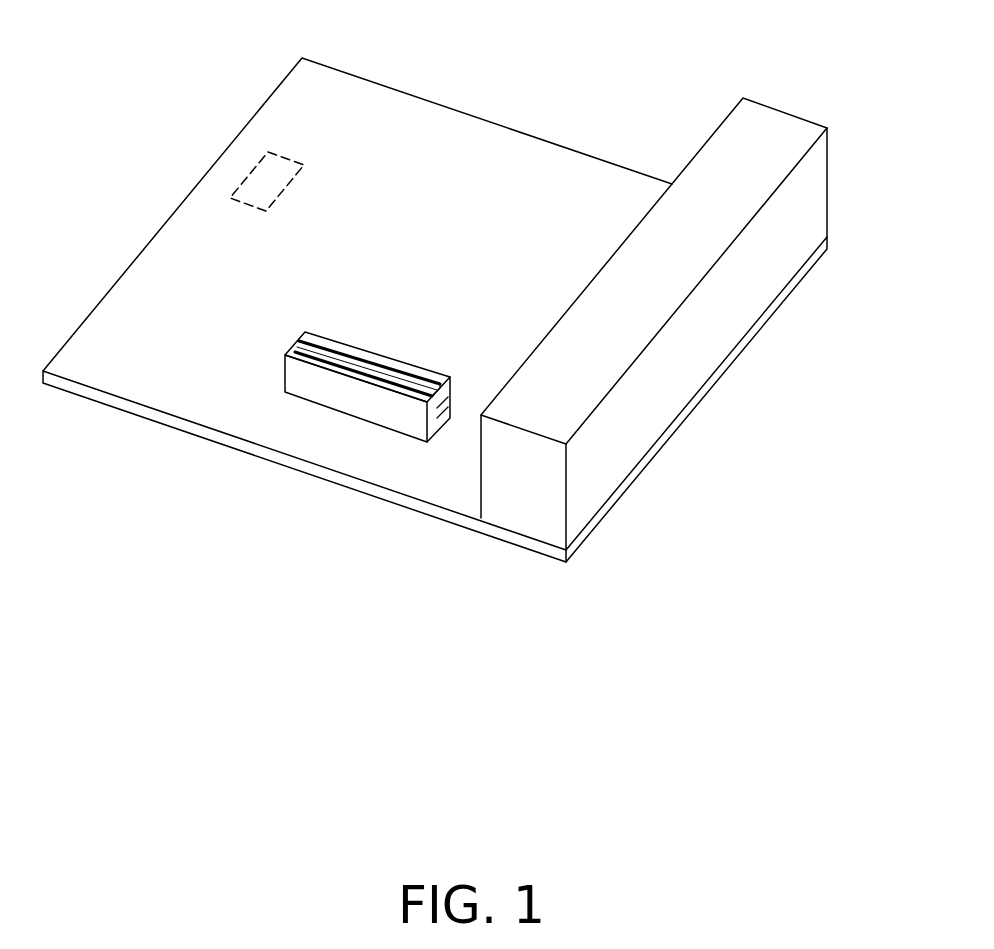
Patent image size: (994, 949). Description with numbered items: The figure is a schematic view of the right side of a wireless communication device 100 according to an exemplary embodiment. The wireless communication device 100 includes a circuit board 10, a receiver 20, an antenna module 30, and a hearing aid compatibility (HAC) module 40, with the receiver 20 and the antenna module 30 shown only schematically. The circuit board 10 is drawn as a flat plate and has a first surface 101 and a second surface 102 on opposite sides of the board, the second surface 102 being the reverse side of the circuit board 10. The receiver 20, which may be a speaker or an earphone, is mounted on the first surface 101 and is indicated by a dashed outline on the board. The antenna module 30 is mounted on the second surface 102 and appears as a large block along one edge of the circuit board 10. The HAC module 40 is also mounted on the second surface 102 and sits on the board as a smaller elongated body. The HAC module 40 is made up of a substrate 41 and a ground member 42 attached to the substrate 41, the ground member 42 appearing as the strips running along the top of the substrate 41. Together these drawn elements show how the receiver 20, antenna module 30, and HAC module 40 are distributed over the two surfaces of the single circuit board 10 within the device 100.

The wireless communication device 100 is at (557, 75).
The circuit board 10 is at (222, 435).
The first surface 101 is at (453, 522).
The second surface 102 is at (167, 383).
The receiver 20 is at (262, 185).
The antenna module 30 is at (697, 343).
The hearing aid compatibility (HAC) module 40 is at (364, 462).
The substrate 41 is at (362, 403).
The ground member 42 is at (417, 398).